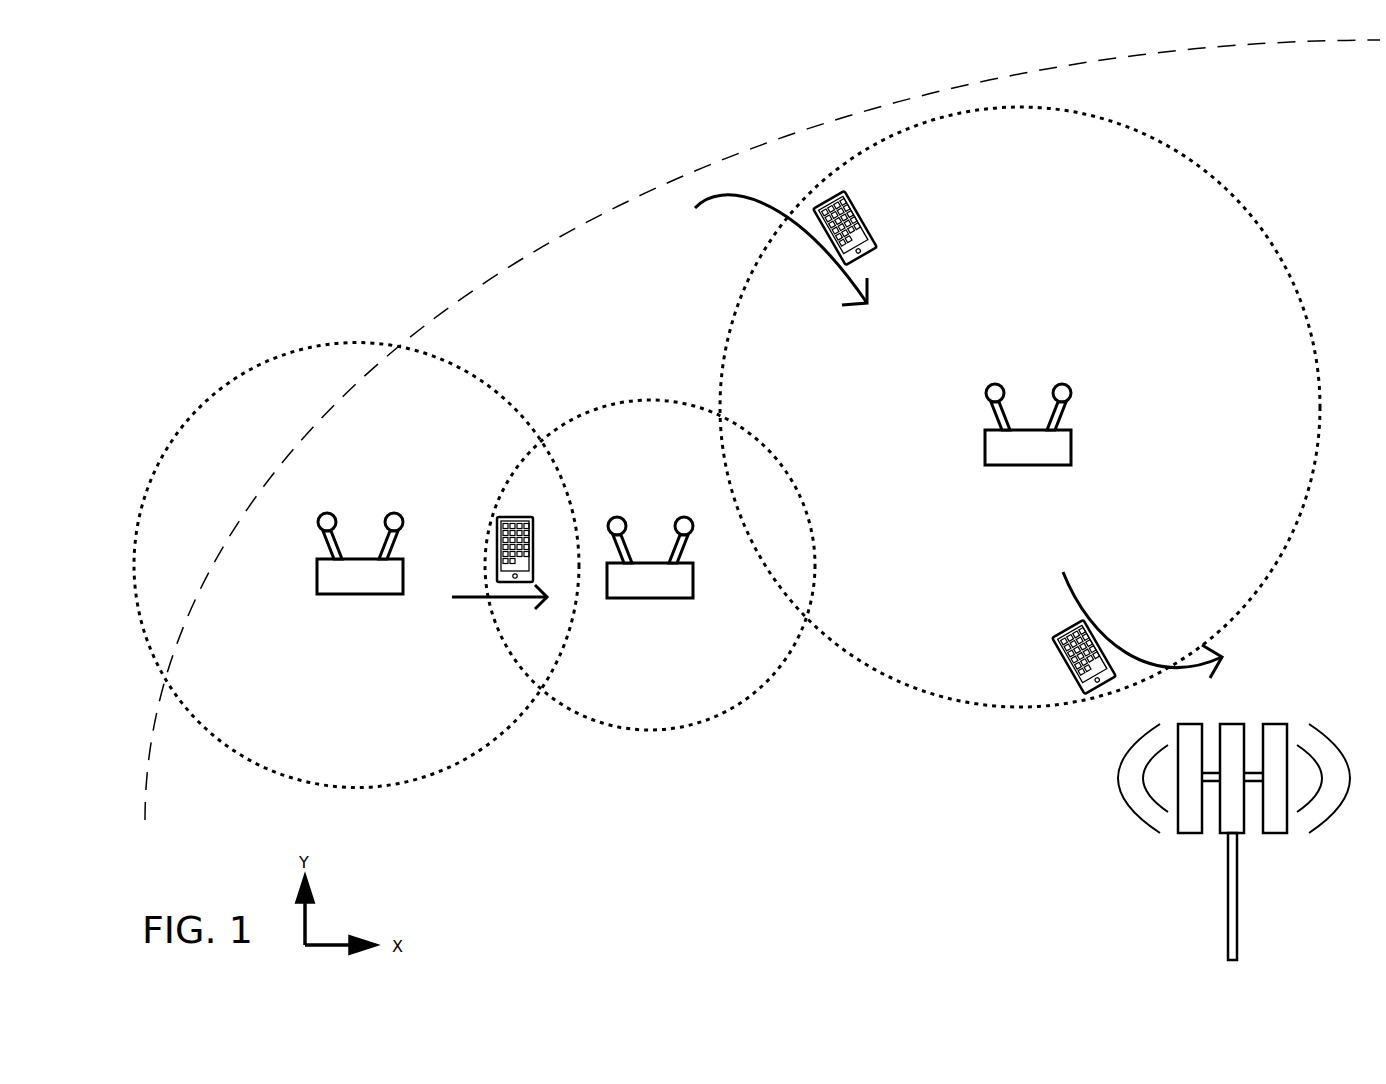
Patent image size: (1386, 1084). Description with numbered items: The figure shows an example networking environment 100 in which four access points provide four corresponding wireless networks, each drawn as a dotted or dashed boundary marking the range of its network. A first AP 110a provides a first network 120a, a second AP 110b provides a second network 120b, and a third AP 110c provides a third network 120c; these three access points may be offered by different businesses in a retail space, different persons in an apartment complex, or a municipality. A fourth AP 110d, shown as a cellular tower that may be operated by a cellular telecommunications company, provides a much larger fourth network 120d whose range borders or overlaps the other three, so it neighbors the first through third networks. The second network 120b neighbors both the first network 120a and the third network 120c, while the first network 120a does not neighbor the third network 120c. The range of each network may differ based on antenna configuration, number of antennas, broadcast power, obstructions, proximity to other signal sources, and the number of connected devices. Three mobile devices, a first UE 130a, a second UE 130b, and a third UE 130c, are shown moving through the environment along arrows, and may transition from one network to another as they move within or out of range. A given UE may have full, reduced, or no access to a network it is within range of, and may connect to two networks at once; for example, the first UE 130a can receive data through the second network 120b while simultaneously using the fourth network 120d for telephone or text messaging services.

The networking environment 100 is at (264, 161).
The first AP 110a is at (357, 594).
The second AP 110b is at (633, 598).
The third AP 110c is at (985, 455).
The fourth AP 110d is at (1228, 920).
The first network 120a is at (341, 343).
The second network 120b is at (757, 688).
The third network 120c is at (1185, 155).
The fourth network 120d is at (552, 243).
The first UE 130a is at (503, 519).
The second UE 130b is at (857, 210).
The third UE 130c is at (1060, 650).